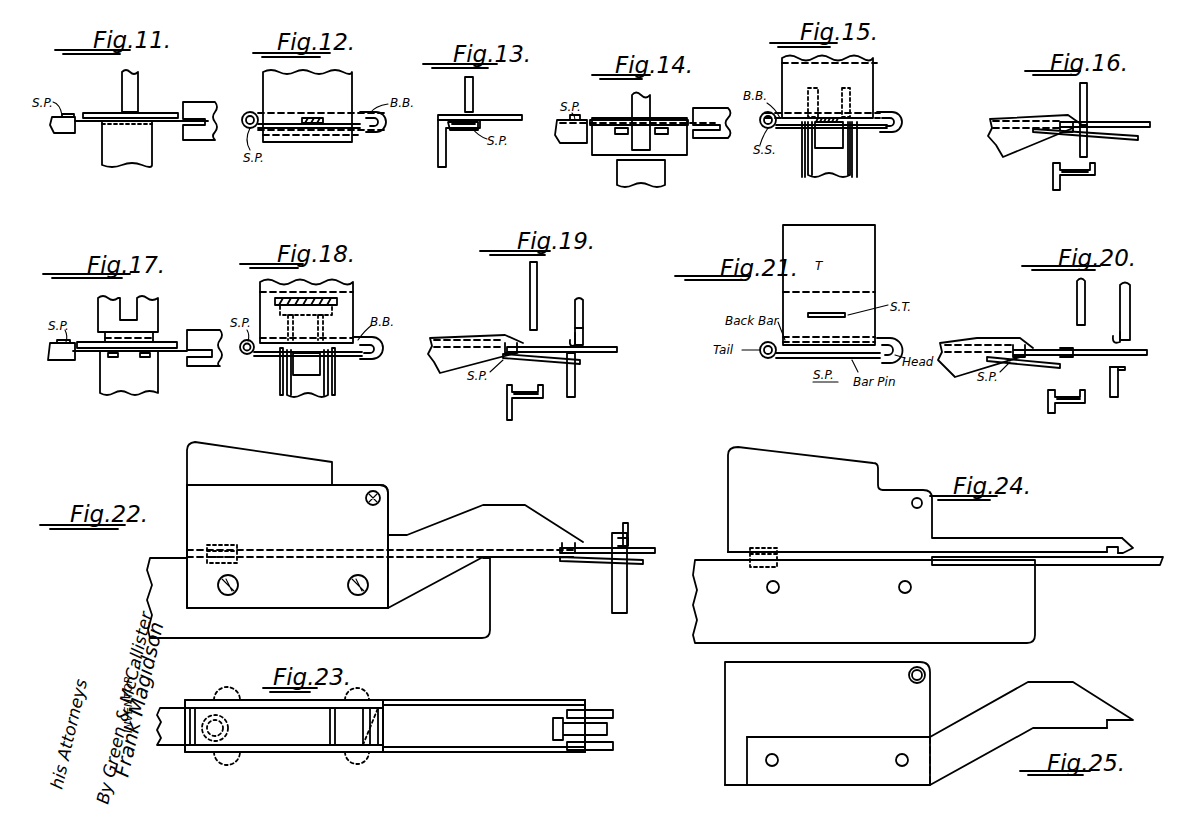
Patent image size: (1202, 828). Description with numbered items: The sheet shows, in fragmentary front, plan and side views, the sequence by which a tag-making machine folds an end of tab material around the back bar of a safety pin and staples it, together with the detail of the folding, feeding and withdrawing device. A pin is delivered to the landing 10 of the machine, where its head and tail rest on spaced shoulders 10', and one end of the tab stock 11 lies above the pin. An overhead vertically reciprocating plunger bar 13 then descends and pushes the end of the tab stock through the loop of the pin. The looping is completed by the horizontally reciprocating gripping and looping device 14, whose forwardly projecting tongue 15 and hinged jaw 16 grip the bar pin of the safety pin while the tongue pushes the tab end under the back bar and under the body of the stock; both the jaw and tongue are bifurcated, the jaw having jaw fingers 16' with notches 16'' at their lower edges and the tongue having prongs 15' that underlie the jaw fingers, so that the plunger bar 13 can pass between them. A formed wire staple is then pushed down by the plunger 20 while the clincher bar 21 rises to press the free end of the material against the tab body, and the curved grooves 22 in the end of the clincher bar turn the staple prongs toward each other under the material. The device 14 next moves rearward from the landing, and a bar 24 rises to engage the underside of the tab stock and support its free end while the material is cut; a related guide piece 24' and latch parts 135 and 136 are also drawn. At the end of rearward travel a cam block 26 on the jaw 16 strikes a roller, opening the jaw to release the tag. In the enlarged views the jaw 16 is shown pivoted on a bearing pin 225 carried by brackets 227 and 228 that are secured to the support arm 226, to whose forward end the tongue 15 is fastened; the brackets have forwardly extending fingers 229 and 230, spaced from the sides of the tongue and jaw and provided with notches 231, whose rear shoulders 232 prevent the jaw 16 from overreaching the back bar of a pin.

In FIG. 11, the landing 10 is at (115, 128).
In FIG. 11, the spaced shoulders 10' is at (133, 132).
In FIG. 14, the spaced shoulders 10' is at (643, 135).
In FIG. 17, the spaced shoulders 10' is at (135, 358).
In FIG. 11, the tab stock 11 is at (165, 113).
In FIG. 12, the tab stock 11 is at (358, 84).
In FIG. 13, the tab stock 11 is at (515, 120).
In FIG. 14, the tab stock 11 is at (660, 120).
In FIG. 15, the tab stock 11 is at (876, 61).
In FIG. 18, the tab stock 11 is at (354, 290).
In FIG. 11, the plunger bar 13 is at (142, 77).
In FIG. 12, the plunger bar 13 is at (300, 118).
In FIG. 13, the plunger bar 13 is at (474, 89).
In FIG. 14, the plunger bar 13 is at (651, 98).
In FIG. 15, the plunger bar 13 is at (812, 140).
In FIG. 16, the plunger bar 13 is at (1088, 93).
In FIG. 19, the plunger bar 13 is at (538, 277).
In FIG. 15, the gripping and looping device 14 is at (883, 177).
In FIG. 16, the gripping and looping device 14 is at (1010, 109).
In FIG. 18, the gripping and looping device 14 is at (274, 391).
In FIG. 19, the gripping and looping device 14 is at (452, 330).
In FIG. 20, the gripping and looping device 14 is at (995, 330).
In FIG. 22, the gripping and looping device 14 is at (380, 475).
In FIG. 24, the gripping and looping device 14 is at (698, 504).
In FIG. 23, the gripping and looping device 14 is at (420, 685).
In FIG. 15, the tongue 15 is at (860, 137).
In FIG. 16, the tongue 15 is at (1085, 142).
In FIG. 18, the tongue 15 is at (329, 369).
In FIG. 19, the tongue 15 is at (560, 360).
In FIG. 20, the tongue 15 is at (1067, 365).
In FIG. 22, the tongue 15 is at (607, 565).
In FIG. 24, the tongue 15 is at (1047, 572).
In FIG. 23, the tongue 15 is at (593, 729).
In FIG. 15, the prongs 15' is at (831, 87).
In FIG. 16, the hinged jaw 16 is at (1036, 124).
In FIG. 19, the hinged jaw 16 is at (475, 343).
In FIG. 20, the hinged jaw 16 is at (984, 349).
In FIG. 22, the hinged jaw 16 is at (485, 556).
In FIG. 24, the hinged jaw 16 is at (925, 521).
In FIG. 23, the hinged jaw 16 is at (484, 726).
In FIG. 23, the jaw fingers 16' is at (593, 730).
In FIG. 24, the notches 16'' is at (1148, 549).
In FIG. 18, the plunger 20 is at (332, 298).
In FIG. 19, the plunger 20 is at (584, 313).
In FIG. 20, the plunger 20 is at (1131, 312).
In FIG. 22, the plunger 20 is at (640, 522).
In FIG. 16, the clincher bar 21 is at (1088, 150).
In FIG. 19, the clincher bar 21 is at (576, 378).
In FIG. 20, the clincher bar 21 is at (1119, 390).
In FIG. 22, the clincher bar 21 is at (628, 582).
In FIG. 20, the curved grooves 22 is at (1120, 368).
In FIG. 13, the bar 24 is at (448, 146).
In FIG. 16, the bar 24 is at (1054, 179).
In FIG. 19, the bar 24 is at (506, 402).
In FIG. 20, the bar 24 is at (1051, 405).
In FIG. 13, the angle member leg 24' is at (463, 146).
In FIG. 16, the angle member leg 24' is at (1086, 184).
In FIG. 19, the angle member leg 24' is at (537, 408).
In FIG. 20, the angle member leg 24' is at (1081, 412).
In FIG. 22, the cam block 26 is at (258, 460).
In FIG. 24, the cam block 26 is at (805, 460).
In FIG. 19, the upper latch bar 135 is at (575, 328).
In FIG. 20, the upper latch bar 135 is at (1087, 306).
In FIG. 22, the upper latch bar 135 is at (620, 543).
In FIG. 19, the hook 136 is at (573, 343).
In FIG. 20, the hook 136 is at (1128, 341).
In FIG. 22, the bearing pin 225 is at (382, 496).
In FIG. 23, the bearing pin 225 is at (355, 746).
In FIG. 22, the support arm 226 is at (333, 635).
In FIG. 24, the support arm 226 is at (753, 624).
In FIG. 23, the support arm 226 is at (165, 748).
In FIG. 22, the bracket 227 is at (345, 503).
In FIG. 23, the bracket 227 is at (287, 752).
In FIG. 23, the bracket 228 is at (248, 700).
In FIG. 23, the forwardly extending finger 229 is at (450, 752).
In FIG. 23, the forwardly extending finger 230 is at (490, 700).
In FIG. 25, the notches 231 is at (1110, 729).
In FIG. 25, the rear shoulders 232 is at (1098, 721).